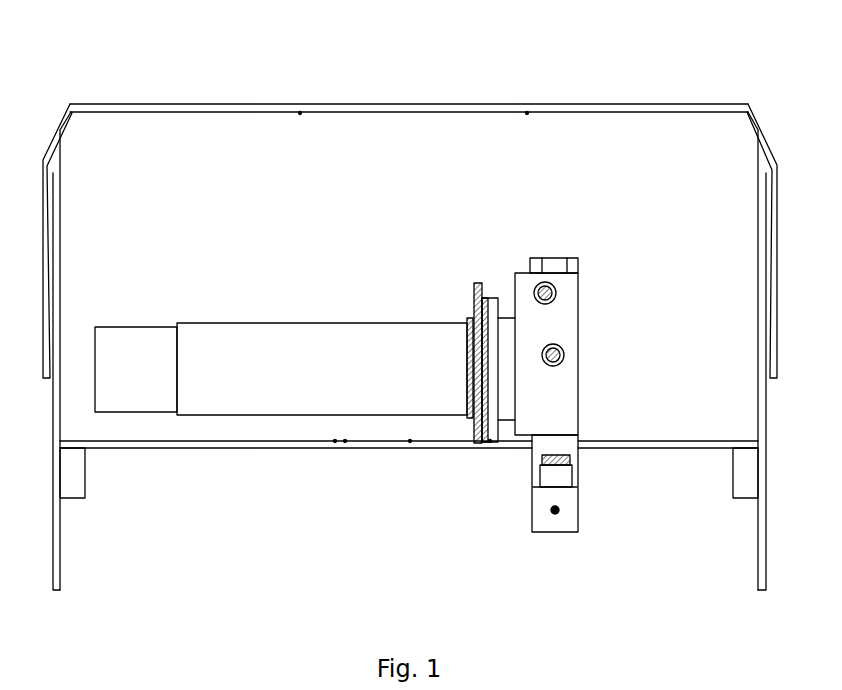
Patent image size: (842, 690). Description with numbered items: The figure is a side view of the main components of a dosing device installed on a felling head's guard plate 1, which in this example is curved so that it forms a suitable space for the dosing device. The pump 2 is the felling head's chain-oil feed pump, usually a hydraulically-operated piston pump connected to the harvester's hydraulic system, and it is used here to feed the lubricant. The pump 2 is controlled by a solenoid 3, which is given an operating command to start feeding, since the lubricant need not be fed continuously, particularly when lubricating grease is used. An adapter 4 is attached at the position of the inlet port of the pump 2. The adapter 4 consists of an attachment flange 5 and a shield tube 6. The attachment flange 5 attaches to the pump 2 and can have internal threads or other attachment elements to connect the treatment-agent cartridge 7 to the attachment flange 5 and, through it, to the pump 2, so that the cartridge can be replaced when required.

The guard plate 1 is at (634, 105).
The pump 2 is at (568, 295).
The solenoid 3 is at (575, 510).
The adapter 4 is at (478, 292).
The attachment flange 5 is at (492, 300).
The shield tube 6 is at (213, 342).
The treatment-agent cartridge 7 is at (134, 337).